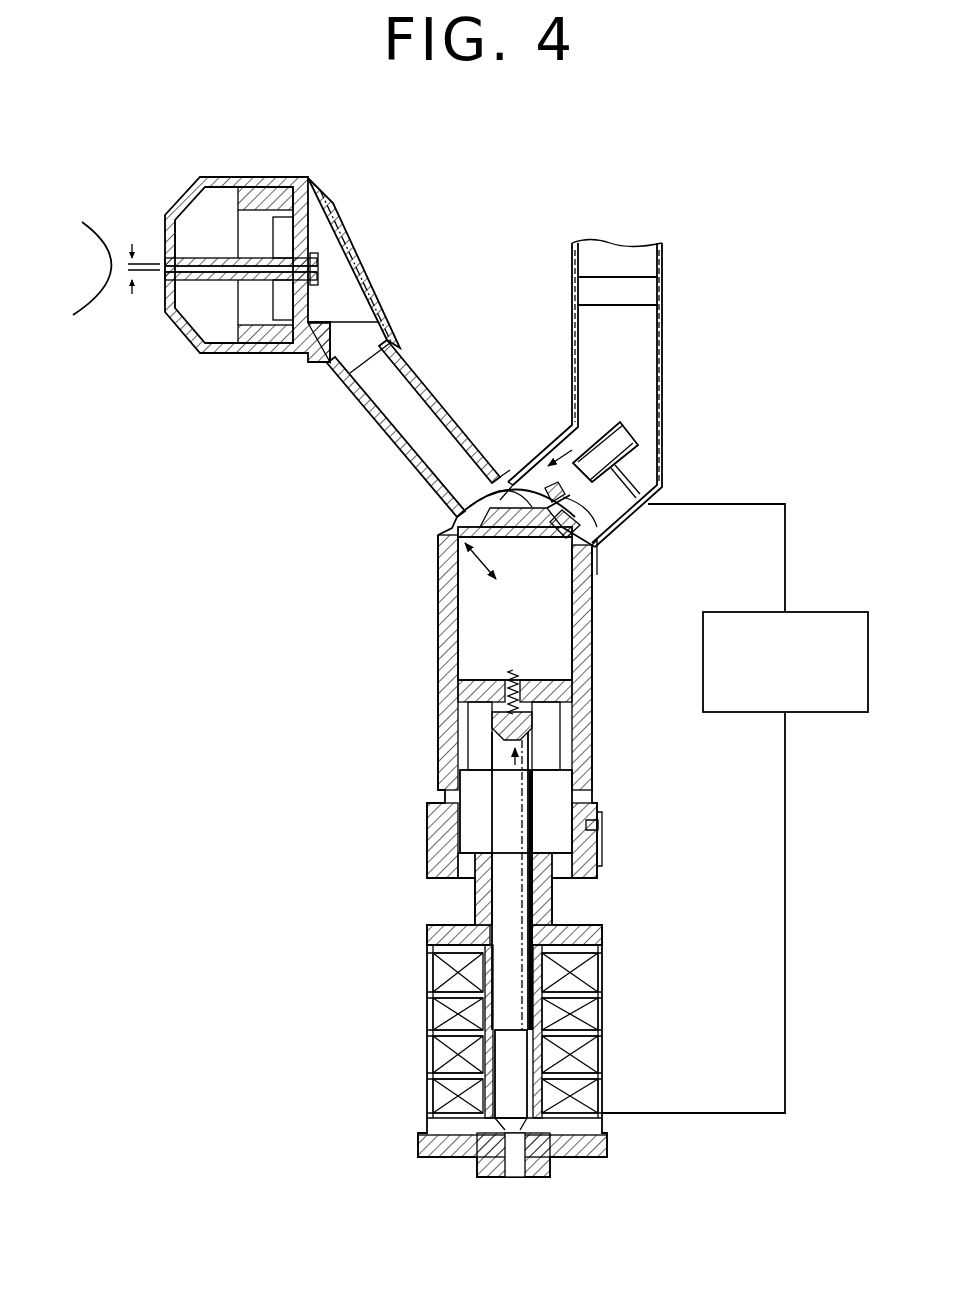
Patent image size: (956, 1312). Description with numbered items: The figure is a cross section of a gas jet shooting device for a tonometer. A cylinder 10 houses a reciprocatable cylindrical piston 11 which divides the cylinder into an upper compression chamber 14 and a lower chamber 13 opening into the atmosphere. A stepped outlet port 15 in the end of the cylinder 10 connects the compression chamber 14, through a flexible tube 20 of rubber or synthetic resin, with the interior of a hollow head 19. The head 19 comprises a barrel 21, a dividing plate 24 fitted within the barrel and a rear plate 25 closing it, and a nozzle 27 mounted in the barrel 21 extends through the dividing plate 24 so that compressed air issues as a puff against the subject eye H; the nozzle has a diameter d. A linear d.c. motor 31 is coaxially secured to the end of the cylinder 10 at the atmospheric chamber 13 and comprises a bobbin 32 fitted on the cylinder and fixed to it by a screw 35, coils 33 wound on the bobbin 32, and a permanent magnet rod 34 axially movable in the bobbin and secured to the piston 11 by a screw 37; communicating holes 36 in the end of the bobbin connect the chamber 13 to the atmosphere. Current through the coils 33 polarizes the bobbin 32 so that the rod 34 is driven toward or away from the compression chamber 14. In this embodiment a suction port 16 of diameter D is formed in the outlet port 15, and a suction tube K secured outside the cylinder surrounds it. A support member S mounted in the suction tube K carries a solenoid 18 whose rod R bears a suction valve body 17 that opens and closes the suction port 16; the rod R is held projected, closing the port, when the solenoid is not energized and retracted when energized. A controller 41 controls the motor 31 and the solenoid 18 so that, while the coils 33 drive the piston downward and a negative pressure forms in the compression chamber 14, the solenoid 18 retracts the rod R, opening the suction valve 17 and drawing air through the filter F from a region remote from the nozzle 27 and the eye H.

The barrel 21 is at (248, 177).
The nozzle 27 is at (200, 257).
The diameter of the nozzle d is at (133, 276).
The subject eye H is at (77, 322).
The dividing plate 24 is at (330, 230).
The hollow head 19 is at (364, 258).
The rear plate 25 is at (383, 284).
The flexible tube 20 is at (405, 460).
The suction port 16 is at (455, 514).
The outlet port 15 is at (535, 545).
The diameter of the suction port D is at (458, 565).
The suction valve body 17 is at (603, 533).
The solenoid 18 is at (638, 440).
The support member S is at (637, 485).
The rod R is at (560, 457).
The suction tube K is at (662, 370).
The filter F is at (633, 287).
The cylinder 10 is at (593, 598).
The compression chamber 14 is at (485, 638).
The piston 11 is at (578, 700).
The screw 37 is at (514, 670).
The lower chamber 13 is at (560, 787).
The bobbin 32 is at (416, 834).
The screw 35 is at (600, 826).
The communicating holes 36 is at (467, 884).
The linear d.c. motor 31 is at (607, 968).
The coils 33 is at (587, 980).
The permanent magnet rod 34 is at (500, 983).
The controller 41 is at (728, 612).